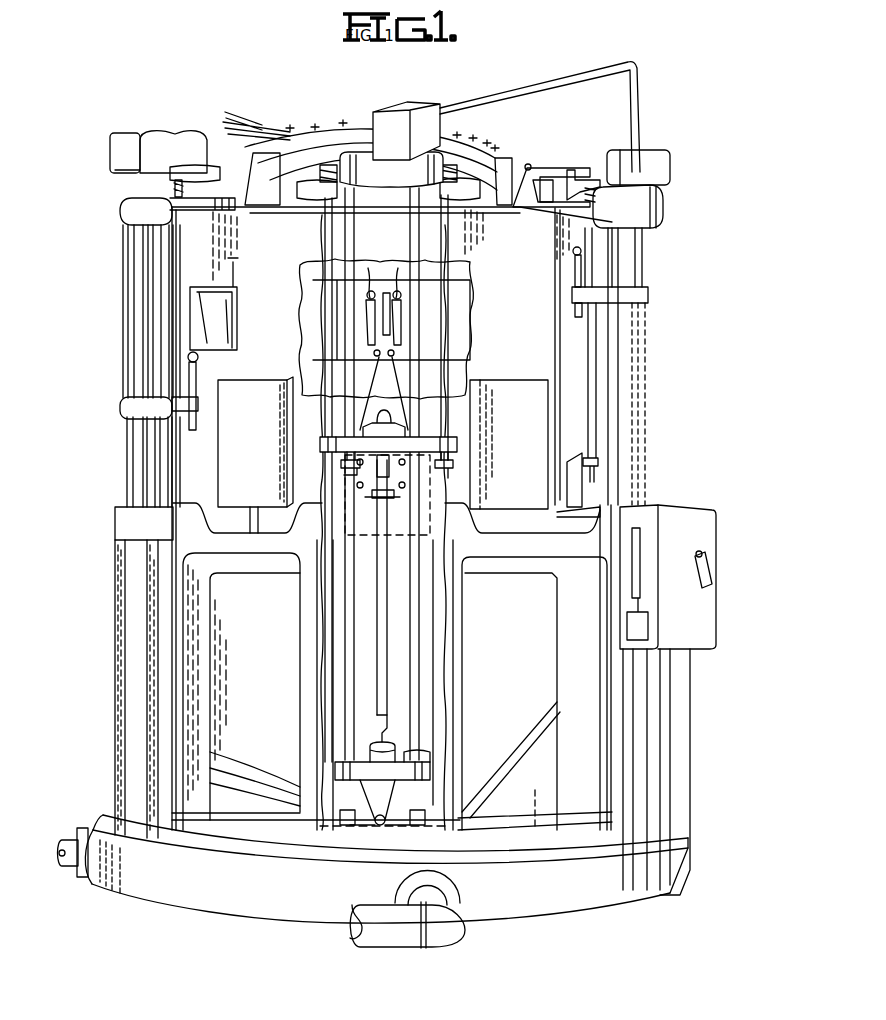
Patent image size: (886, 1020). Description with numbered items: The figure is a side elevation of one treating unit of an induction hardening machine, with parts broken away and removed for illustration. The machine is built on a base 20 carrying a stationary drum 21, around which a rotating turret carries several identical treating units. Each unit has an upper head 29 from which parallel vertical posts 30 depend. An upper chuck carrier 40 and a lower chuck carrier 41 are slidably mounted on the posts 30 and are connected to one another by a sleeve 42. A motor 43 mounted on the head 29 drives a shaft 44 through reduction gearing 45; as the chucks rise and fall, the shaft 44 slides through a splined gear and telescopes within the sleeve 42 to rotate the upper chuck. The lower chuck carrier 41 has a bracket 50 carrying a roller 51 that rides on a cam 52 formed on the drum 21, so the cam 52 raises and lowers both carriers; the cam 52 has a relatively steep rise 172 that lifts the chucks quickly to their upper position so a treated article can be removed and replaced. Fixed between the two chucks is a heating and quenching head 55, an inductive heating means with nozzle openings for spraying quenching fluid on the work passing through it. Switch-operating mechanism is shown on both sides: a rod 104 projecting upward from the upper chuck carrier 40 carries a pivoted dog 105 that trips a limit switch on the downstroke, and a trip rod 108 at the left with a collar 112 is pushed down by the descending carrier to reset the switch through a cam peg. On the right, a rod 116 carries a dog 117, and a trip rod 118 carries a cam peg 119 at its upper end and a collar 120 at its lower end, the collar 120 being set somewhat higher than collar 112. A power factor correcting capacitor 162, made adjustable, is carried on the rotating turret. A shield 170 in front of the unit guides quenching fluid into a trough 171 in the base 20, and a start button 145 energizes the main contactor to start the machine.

The base 20 is at (176, 890).
The stationary drum 21 is at (520, 700).
The upper head 29 is at (423, 165).
The vertical posts 30 is at (124, 310).
The upper chuck carrier 40 is at (430, 440).
The lower chuck carrier 41 is at (397, 762).
The sleeve 42 is at (137, 477).
The motor 43 is at (200, 142).
The shaft 44 is at (150, 348).
The reduction gearing 45 is at (425, 112).
The bracket 50 is at (373, 830).
The roller 51 is at (391, 819).
The cam 52 is at (507, 767).
The heating and quenching head 55 is at (397, 503).
The rod 104 is at (572, 290).
The dog 105 is at (572, 258).
The trip rod 108 is at (327, 430).
The collar 112 is at (334, 470).
The rod 116 is at (197, 378).
The dog 117 is at (199, 356).
The trip rod 118 is at (176, 272).
The cam peg 119 is at (212, 184).
The collar 120 is at (453, 470).
The start button 145 is at (712, 578).
The power factor correcting capacitor 162 is at (277, 368).
The shield 170 is at (124, 713).
The trough 171 is at (108, 824).
The steep rise 172 is at (530, 737).